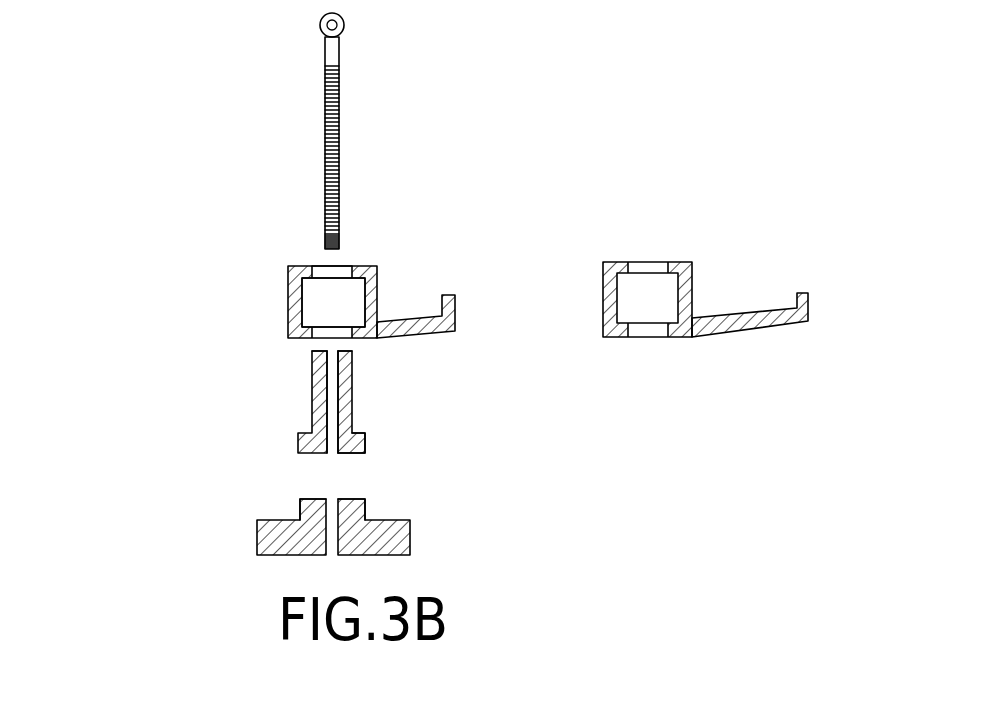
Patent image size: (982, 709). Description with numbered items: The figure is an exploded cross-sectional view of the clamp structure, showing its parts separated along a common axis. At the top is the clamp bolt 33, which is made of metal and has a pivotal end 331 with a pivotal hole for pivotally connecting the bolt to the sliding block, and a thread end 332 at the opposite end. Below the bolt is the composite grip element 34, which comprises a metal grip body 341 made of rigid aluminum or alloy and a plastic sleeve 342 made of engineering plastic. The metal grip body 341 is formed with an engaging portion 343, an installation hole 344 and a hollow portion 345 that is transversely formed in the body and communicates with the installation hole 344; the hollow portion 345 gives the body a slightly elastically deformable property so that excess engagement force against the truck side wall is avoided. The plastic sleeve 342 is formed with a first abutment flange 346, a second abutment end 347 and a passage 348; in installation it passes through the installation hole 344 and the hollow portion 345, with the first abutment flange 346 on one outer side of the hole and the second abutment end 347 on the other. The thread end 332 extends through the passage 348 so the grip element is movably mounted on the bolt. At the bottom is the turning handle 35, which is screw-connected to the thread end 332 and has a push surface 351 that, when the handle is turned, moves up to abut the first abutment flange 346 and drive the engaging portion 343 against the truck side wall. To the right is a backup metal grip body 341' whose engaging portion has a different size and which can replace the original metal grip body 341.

The clamp bolt 33 is at (309, 145).
The pivotal end 331 is at (320, 25).
The thread end 332 is at (323, 237).
The composite grip element 34 is at (140, 285).
The metal grip body 341 is at (336, 241).
The backup metal grip body 341' is at (716, 257).
The plastic sleeve 342 is at (281, 438).
The engaging portion 343 is at (448, 295).
The installation hole 344 is at (340, 265).
The hollow portion 345 is at (352, 290).
The first abutment flange 346 is at (365, 436).
The second abutment end 347 is at (335, 345).
The passage 348 is at (330, 443).
The turning handle 35 is at (246, 549).
The push surface 351 is at (302, 500).